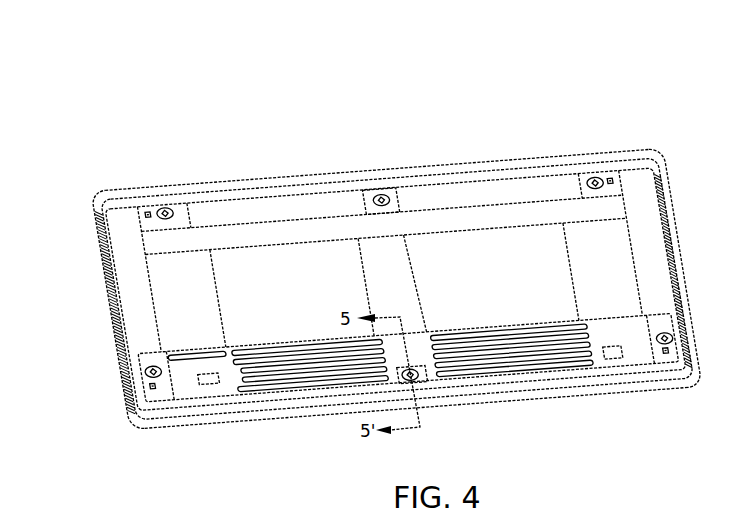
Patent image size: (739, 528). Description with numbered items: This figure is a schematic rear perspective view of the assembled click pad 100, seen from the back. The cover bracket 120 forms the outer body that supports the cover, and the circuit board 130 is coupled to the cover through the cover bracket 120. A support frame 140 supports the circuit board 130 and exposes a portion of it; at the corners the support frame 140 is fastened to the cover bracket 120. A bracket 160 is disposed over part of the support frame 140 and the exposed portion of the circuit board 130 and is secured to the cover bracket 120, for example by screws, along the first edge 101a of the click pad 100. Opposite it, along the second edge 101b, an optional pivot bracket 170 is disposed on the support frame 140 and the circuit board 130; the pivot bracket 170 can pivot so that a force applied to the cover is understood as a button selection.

The click pad 100 is at (548, 50).
The first edge 101a is at (233, 418).
The second edge 101b is at (272, 175).
The cover bracket 120 is at (118, 314).
The circuit board 130 is at (524, 284).
The support frame 140 is at (190, 270).
The bracket 160 is at (635, 348).
The pivot bracket 170 is at (487, 218).